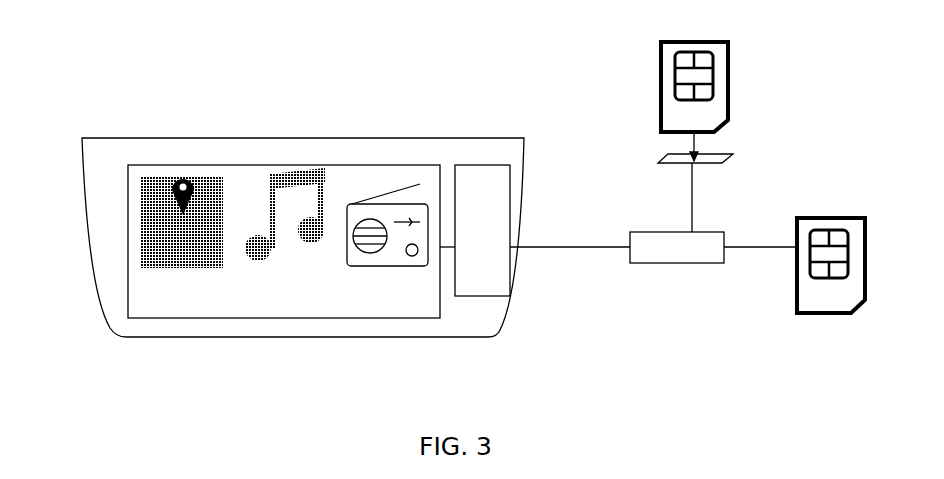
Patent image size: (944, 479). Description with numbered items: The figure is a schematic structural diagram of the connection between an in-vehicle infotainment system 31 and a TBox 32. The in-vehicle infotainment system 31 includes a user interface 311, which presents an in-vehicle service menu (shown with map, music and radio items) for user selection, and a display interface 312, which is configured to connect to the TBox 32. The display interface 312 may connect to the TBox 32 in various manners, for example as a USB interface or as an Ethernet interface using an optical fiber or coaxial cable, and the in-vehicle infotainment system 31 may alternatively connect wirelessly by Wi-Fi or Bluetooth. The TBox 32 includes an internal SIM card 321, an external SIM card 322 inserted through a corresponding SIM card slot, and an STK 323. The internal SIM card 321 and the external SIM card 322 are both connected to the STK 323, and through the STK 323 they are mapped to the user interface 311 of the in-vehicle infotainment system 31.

The in-vehicle infotainment system 31 is at (112, 305).
The user interface 311 is at (302, 302).
The display interface 312 is at (480, 300).
The TBox 32 is at (632, 307).
The internal SIM card 321 is at (813, 298).
The external SIM card 322 is at (716, 90).
The STK 323 is at (686, 262).